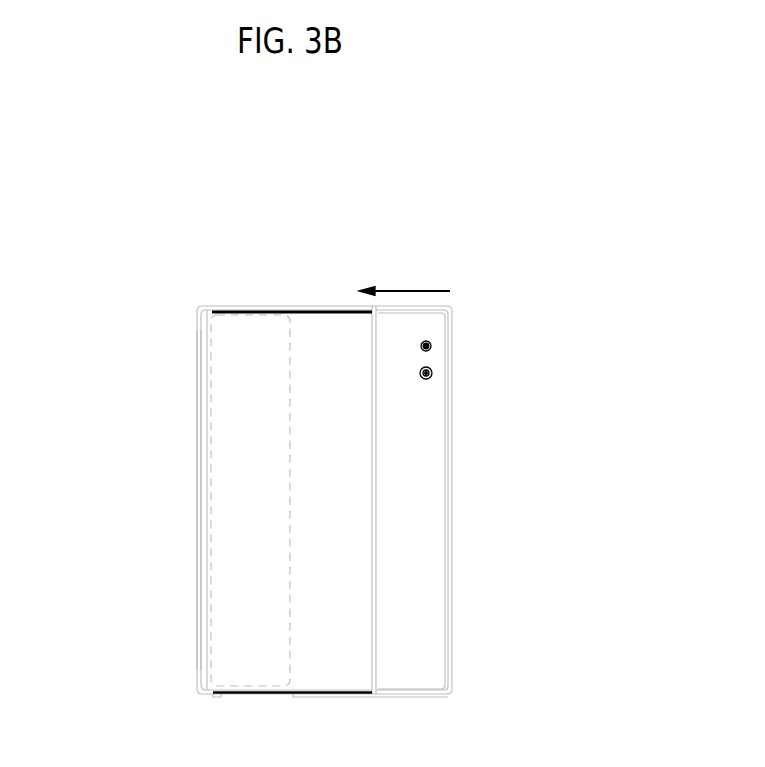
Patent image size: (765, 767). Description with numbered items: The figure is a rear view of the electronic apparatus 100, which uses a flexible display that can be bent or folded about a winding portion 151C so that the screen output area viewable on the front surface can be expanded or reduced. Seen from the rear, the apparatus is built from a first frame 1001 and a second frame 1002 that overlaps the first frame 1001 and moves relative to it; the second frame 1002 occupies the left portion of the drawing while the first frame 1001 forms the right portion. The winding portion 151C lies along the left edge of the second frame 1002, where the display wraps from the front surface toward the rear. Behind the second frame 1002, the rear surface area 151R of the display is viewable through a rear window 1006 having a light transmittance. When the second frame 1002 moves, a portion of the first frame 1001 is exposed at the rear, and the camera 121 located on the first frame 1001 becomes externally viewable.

The electronic apparatus 100 is at (227, 245).
The first frame 1001 is at (415, 697).
The second frame 1002 is at (213, 697).
The rear window 1006 is at (212, 383).
The winding portion 151C is at (208, 453).
The rear surface area 151R is at (249, 325).
The camera 121 is at (433, 373).